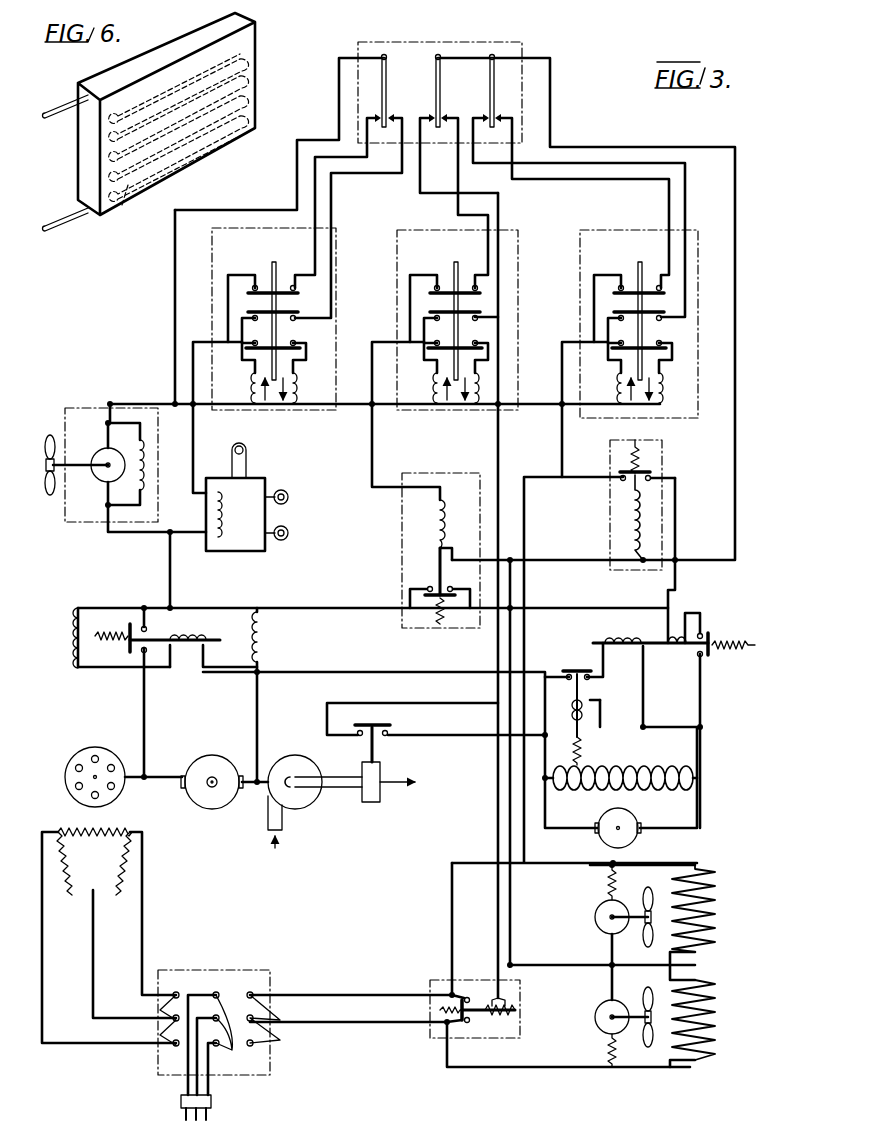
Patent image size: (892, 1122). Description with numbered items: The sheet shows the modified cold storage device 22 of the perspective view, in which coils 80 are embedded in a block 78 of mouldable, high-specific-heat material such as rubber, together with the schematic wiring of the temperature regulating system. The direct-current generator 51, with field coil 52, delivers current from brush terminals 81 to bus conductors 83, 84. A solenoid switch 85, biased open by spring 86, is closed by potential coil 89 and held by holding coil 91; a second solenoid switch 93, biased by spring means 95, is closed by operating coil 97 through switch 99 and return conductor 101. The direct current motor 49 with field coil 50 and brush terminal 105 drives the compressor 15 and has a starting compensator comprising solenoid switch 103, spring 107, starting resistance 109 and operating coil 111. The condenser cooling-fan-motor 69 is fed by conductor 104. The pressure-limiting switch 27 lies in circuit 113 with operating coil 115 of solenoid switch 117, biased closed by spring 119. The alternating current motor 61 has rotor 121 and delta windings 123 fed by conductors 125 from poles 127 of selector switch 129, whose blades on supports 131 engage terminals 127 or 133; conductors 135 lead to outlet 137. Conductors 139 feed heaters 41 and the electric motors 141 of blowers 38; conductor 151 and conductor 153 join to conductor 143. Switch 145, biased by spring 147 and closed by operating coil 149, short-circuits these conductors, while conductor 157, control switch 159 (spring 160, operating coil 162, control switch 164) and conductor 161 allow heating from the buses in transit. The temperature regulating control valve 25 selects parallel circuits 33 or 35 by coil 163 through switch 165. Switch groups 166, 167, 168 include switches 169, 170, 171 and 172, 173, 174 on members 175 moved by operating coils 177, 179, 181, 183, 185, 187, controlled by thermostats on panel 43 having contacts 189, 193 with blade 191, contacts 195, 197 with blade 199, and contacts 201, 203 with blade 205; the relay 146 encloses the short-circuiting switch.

In FIG. 6, the cold storage device 22 is at (76, 150).
In FIG. 6, the block 78 is at (110, 70).
In FIG. 6, the coils 80 is at (179, 145).
In FIG. 3, the compressor 15 is at (302, 800).
In FIG. 3, the temperature regulating control valve 25 is at (252, 555).
In FIG. 3, the pressure-limiting switch 27 is at (370, 804).
In FIG. 3, the parallel circuits 33 is at (286, 542).
In FIG. 3, the parallel circuits 35 is at (286, 492).
In FIG. 3, the blowers 38 is at (618, 878).
In FIG. 3, the heaters 41 is at (712, 906).
In FIG. 3, the panel 43 is at (418, 50).
In FIG. 3, the direct current motor 49 is at (206, 812).
In FIG. 3, the field coil 50 is at (264, 640).
In FIG. 3, the direct-current generator 51 is at (630, 840).
In FIG. 3, the field coil 52 is at (660, 768).
In FIG. 3, the alternating current motor 61 is at (72, 762).
In FIG. 3, the condenser cooling-fan-motor 69 is at (104, 483).
In FIG. 3, the brush terminals 81 is at (596, 822).
In FIG. 3, the bus conductor 83 is at (313, 607).
In FIG. 3, the bus conductor 84 is at (259, 711).
In FIG. 3, the solenoid switch 85 is at (712, 634).
In FIG. 3, the spring 86 is at (748, 650).
In FIG. 3, the operating coil 89 is at (632, 636).
In FIG. 3, the holding coil 91 is at (674, 650).
In FIG. 3, the solenoid switch 93 is at (438, 572).
In FIG. 3, the spring means 95 is at (438, 628).
In FIG. 3, the operating coil 97 is at (448, 492).
In FIG. 3, the switch 99 is at (480, 344).
In FIG. 3, the conductor 101 is at (135, 402).
In FIG. 3, the solenoid switch 103 is at (144, 620).
In FIG. 3, the conductor 104 is at (258, 200).
In FIG. 3, the brush terminal 105 is at (180, 792).
In FIG. 3, the spring 107 is at (106, 622).
In FIG. 3, the starting resistance 109 is at (78, 668).
In FIG. 3, the operating coil 111 is at (190, 630).
In FIG. 3, the circuit 113 is at (436, 736).
In FIG. 3, the operating coil 115 is at (592, 707).
In FIG. 3, the solenoid switch 117 is at (576, 668).
In FIG. 3, the spring 119 is at (582, 748).
In FIG. 3, the rotor 121 is at (74, 786).
In FIG. 3, the stationary windings 123 is at (94, 861).
In FIG. 3, the conductors 125 is at (44, 972).
In FIG. 3, the poles 127 is at (160, 1010).
In FIG. 3, the selector switch 129 is at (272, 1060).
In FIG. 3, the central blade supports 131 is at (230, 1034).
In FIG. 3, the blade-receiving terminals 133 is at (282, 1020).
In FIG. 3, the conductors 135 is at (208, 1092).
In FIG. 3, the outlet 137 is at (212, 1104).
In FIG. 3, the conductors 139 is at (358, 1022).
In FIG. 3, the electric motors 141 is at (596, 906).
In FIG. 3, the conductor 143 is at (557, 970).
In FIG. 3, the switch 145 is at (468, 995).
In FIG. 3, the relay 146 is at (522, 990).
In FIG. 3, the spring 147 is at (452, 1018).
In FIG. 3, the operating coil 149 is at (500, 1022).
In FIG. 3, the conductor 151 is at (695, 967).
In FIG. 3, the conductor 153 is at (614, 960).
In FIG. 3, the conductor 157 is at (522, 855).
In FIG. 3, the control switch 159 is at (614, 452).
In FIG. 3, the spring 160 is at (652, 454).
In FIG. 3, the conductor 161 is at (738, 243).
In FIG. 3, the operating coil 162 is at (646, 518).
In FIG. 3, the coil 163 is at (220, 540).
In FIG. 3, the control switch 164 is at (664, 344).
In FIG. 3, the switch 165 is at (300, 333).
In FIG. 3, the group 166 is at (220, 238).
In FIG. 3, the group 167 is at (416, 232).
In FIG. 3, the group 168 is at (604, 234).
In FIG. 3, the switch 169 is at (250, 290).
In FIG. 3, the switch 170 is at (432, 296).
In FIG. 3, the switch 171 is at (616, 296).
In FIG. 3, the switch 172 is at (250, 312).
In FIG. 3, the switch 173 is at (482, 318).
In FIG. 3, the switch 174 is at (666, 318).
In FIG. 3, the members 175 is at (274, 262).
In FIG. 3, the operating coil 177 is at (239, 386).
In FIG. 3, the operating coil 179 is at (300, 386).
In FIG. 3, the operating coil 181 is at (432, 392).
In FIG. 3, the operating coil 183 is at (482, 388).
In FIG. 3, the operating coil 185 is at (616, 392).
In FIG. 3, the operating coil 187 is at (664, 388).
In FIG. 3, the contact 189 is at (392, 110).
In FIG. 3, the blade 191 is at (380, 75).
In FIG. 3, the contact 193 is at (364, 106).
In FIG. 3, the contact 195 is at (418, 118).
In FIG. 3, the contact 197 is at (460, 113).
In FIG. 3, the blade 199 is at (436, 72).
In FIG. 3, the contact 201 is at (516, 112).
In FIG. 3, the contact 203 is at (482, 110).
In FIG. 3, the blade 205 is at (494, 68).